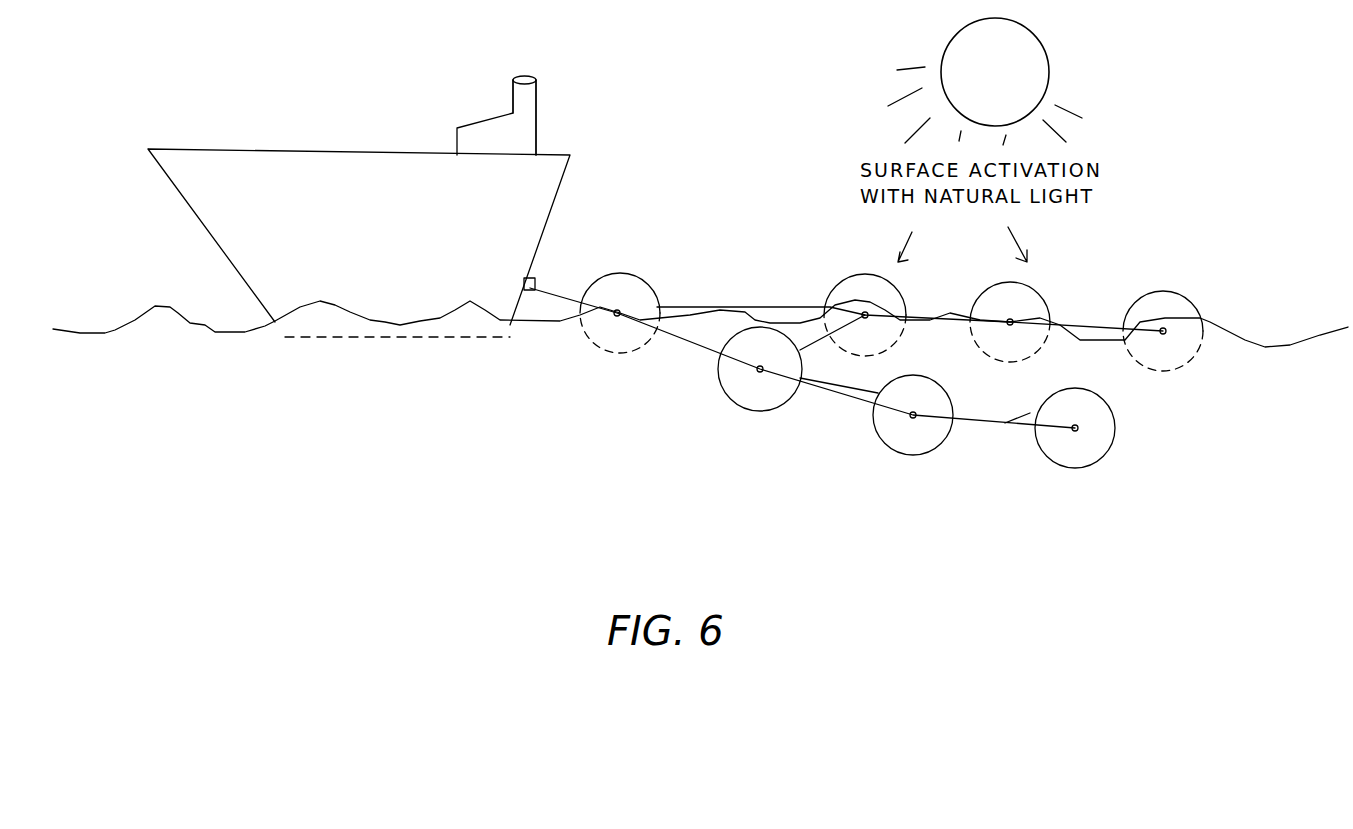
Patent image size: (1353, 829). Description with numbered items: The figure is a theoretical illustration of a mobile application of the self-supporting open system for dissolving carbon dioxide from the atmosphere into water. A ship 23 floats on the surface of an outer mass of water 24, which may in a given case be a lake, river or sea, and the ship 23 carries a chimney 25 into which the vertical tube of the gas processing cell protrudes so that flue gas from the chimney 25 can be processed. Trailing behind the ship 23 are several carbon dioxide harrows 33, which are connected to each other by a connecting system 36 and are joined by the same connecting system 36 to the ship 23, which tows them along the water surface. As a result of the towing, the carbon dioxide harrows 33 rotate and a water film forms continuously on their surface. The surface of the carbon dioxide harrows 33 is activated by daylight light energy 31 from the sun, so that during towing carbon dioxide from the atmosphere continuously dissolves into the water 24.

The ship 23 is at (212, 232).
The outer mass of water 24 is at (700, 361).
The chimney 25 is at (536, 100).
The daylight light energy 31 is at (962, 238).
The carbon dioxide harrows 33 is at (633, 277).
The connecting system 36 is at (763, 307).